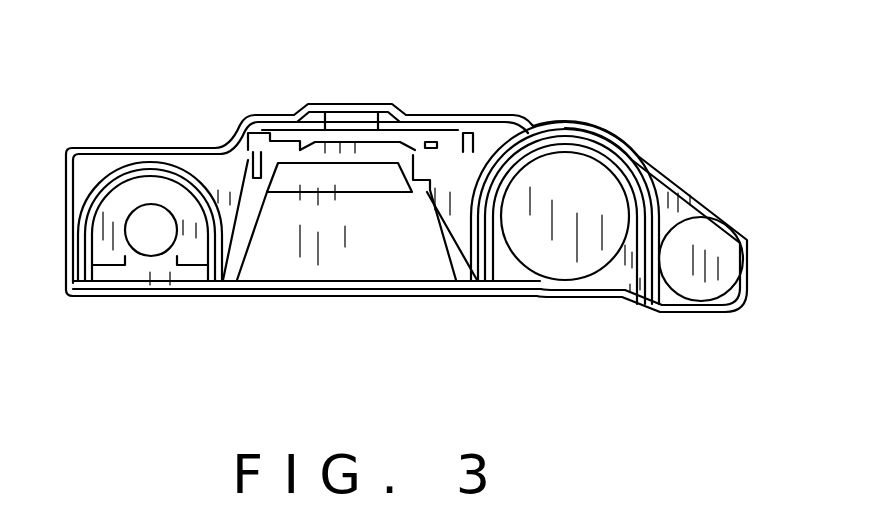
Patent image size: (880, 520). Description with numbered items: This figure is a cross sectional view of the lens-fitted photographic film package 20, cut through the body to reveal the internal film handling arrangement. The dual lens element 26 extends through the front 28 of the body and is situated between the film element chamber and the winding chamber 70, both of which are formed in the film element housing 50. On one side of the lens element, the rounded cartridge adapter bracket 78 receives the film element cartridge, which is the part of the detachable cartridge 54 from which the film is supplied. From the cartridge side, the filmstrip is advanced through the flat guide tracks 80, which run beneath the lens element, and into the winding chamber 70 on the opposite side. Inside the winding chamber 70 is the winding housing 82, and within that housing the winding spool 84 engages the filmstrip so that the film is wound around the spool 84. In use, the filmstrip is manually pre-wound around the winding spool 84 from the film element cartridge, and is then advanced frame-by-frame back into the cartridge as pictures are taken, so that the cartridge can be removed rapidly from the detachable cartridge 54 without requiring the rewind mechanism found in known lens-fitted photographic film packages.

The lens-fitted photographic film package 20 is at (692, 60).
The dual lens element 26 is at (340, 108).
The front 28 is at (578, 242).
The film element housing 50 is at (197, 178).
The detachable cartridge 54 is at (243, 297).
The winding chamber 70 is at (138, 268).
The rounded cartridge adapter bracket 78 is at (587, 157).
The flat guide tracks 80 is at (318, 272).
The winding housing 82 is at (168, 188).
The winding spool 84 is at (146, 218).